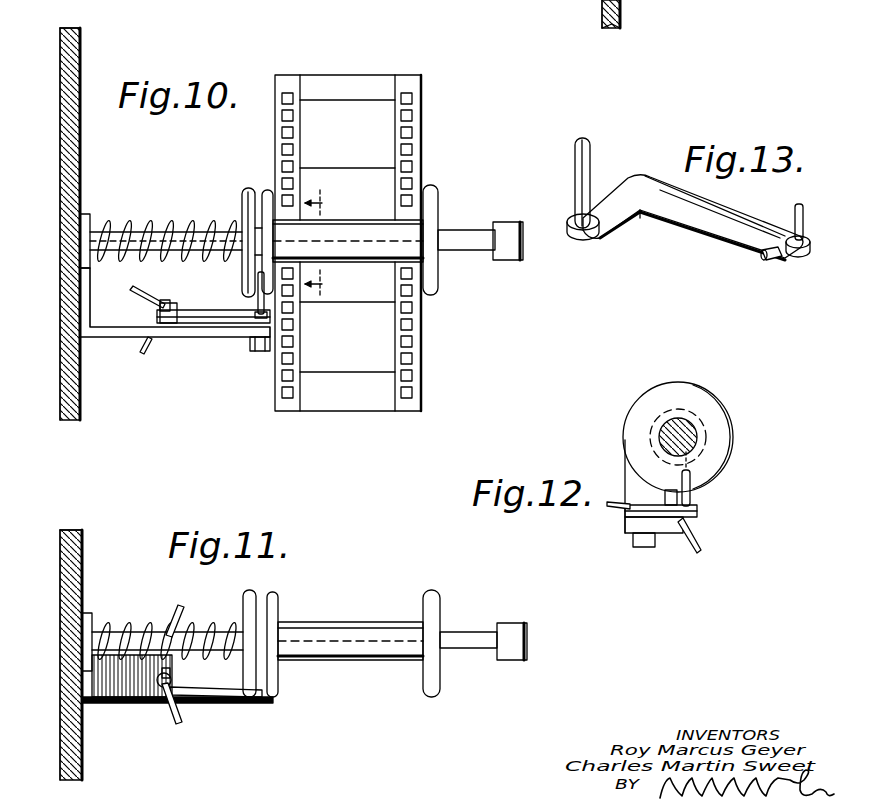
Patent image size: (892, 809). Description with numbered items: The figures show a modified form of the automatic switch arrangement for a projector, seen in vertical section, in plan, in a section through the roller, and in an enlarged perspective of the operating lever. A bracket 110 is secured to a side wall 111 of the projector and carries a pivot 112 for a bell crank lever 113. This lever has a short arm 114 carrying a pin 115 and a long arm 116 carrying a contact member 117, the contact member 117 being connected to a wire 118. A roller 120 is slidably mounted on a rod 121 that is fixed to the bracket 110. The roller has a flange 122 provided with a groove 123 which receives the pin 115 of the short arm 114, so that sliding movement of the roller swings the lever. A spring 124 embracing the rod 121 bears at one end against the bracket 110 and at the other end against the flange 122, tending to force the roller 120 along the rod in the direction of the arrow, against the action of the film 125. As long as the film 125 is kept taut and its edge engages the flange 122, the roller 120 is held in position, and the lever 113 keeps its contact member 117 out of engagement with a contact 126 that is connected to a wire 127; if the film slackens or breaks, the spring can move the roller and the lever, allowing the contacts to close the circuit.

In FIG. 10, the bracket 110 is at (125, 338).
In FIG. 12, the bracket 110 is at (632, 475).
In FIG. 11, the bracket 110 is at (108, 703).
In FIG. 10, the side wall 111 is at (60, 180).
In FIG. 10, the pivot 112 is at (258, 352).
In FIG. 10, the bell crank lever 113 is at (212, 310).
In FIG. 13, the bell crank lever 113 is at (650, 176).
In FIG. 11, the bell crank lever 113 is at (256, 698).
In FIG. 13, the short arm 114 is at (632, 234).
In FIG. 12, the short arm 114 is at (698, 508).
In FIG. 10, the pin 115 is at (268, 300).
In FIG. 13, the pin 115 is at (575, 150).
In FIG. 12, the pin 115 is at (692, 498).
In FIG. 13, the long arm 116 is at (740, 215).
In FIG. 13, the contact member 117 is at (776, 258).
In FIG. 11, the contact member 117 is at (172, 679).
In FIG. 10, the wire 118 is at (162, 283).
In FIG. 13, the wire 118 is at (803, 206).
In FIG. 12, the wire 118 is at (612, 506).
In FIG. 11, the wire 118 is at (184, 724).
In FIG. 10, the roller 120 is at (362, 222).
In FIG. 11, the roller 120 is at (356, 620).
In FIG. 10, the rod 121 is at (476, 250).
In FIG. 12, the rod 121 is at (692, 430).
In FIG. 11, the rod 121 is at (470, 630).
In FIG. 10, the flange 122 is at (240, 198).
In FIG. 12, the flange 122 is at (690, 366).
In FIG. 11, the flange 122 is at (258, 612).
In FIG. 10, the groove 123 is at (258, 190).
In FIG. 11, the groove 123 is at (264, 600).
In FIG. 10, the spring 124 is at (153, 218).
In FIG. 11, the spring 124 is at (210, 626).
In FIG. 10, the film 125 is at (368, 86).
In FIG. 10, the contact 126 is at (168, 328).
In FIG. 11, the contact 126 is at (165, 670).
In FIG. 10, the wire 127 is at (148, 350).
In FIG. 12, the wire 127 is at (703, 545).
In FIG. 11, the wire 127 is at (180, 606).